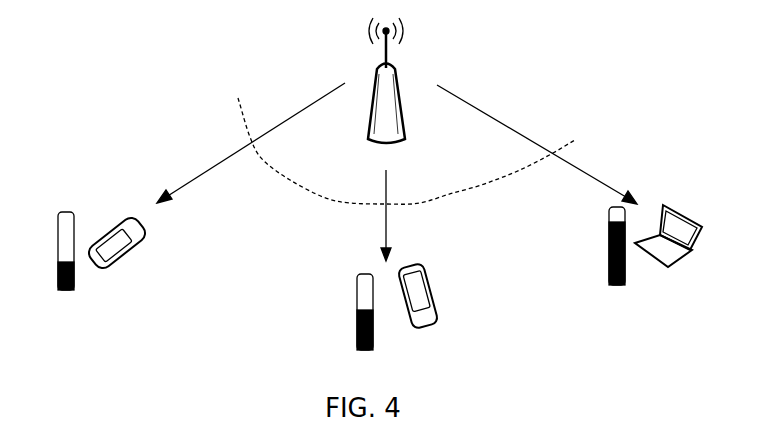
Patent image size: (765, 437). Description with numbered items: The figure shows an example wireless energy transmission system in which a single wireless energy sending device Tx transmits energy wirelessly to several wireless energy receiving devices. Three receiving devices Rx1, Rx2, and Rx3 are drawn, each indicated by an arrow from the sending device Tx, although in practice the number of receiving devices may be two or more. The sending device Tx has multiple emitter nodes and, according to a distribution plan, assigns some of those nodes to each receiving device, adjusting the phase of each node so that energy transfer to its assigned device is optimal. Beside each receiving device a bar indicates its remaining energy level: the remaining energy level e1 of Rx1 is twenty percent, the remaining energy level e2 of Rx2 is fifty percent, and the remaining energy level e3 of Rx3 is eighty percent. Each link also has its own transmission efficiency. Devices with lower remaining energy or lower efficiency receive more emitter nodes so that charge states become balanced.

The wireless energy sending device Tx is at (386, 93).
The wireless energy receiving device Rx1 is at (116, 254).
The wireless energy receiving device Rx2 is at (417, 307).
The wireless energy receiving device Rx3 is at (668, 248).
The remaining energy level e1 is at (57, 251).
The remaining energy level e2 is at (353, 312).
The remaining energy level e3 is at (605, 247).